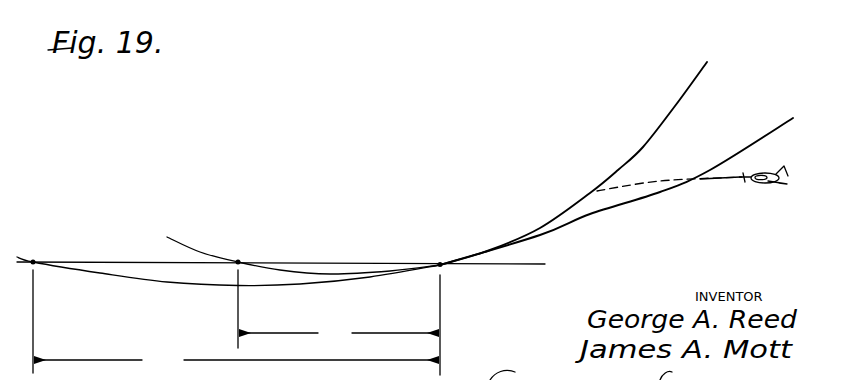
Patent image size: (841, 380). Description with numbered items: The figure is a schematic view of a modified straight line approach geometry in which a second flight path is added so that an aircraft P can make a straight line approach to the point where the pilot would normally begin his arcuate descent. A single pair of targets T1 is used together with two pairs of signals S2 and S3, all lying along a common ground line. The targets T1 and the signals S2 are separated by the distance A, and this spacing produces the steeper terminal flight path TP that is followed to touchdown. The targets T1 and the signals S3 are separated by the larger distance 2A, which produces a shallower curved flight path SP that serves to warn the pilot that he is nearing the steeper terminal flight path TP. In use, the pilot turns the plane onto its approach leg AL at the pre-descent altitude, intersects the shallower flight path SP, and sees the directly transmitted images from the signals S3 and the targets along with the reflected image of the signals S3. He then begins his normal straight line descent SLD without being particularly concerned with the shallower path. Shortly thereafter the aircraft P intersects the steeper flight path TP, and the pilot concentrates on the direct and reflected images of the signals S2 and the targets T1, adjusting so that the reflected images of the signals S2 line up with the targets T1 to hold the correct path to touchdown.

The signals S3 is at (228, 262).
The signals S2 is at (303, 255).
The targets T1 is at (438, 252).
The terminal flight path TP is at (643, 148).
The shallower curved flight path SP is at (758, 140).
The straight line descent SLD is at (632, 185).
The approach leg AL is at (718, 179).
The aircraft P is at (771, 189).
The distance A is at (339, 334).
The distance 2A is at (236, 360).